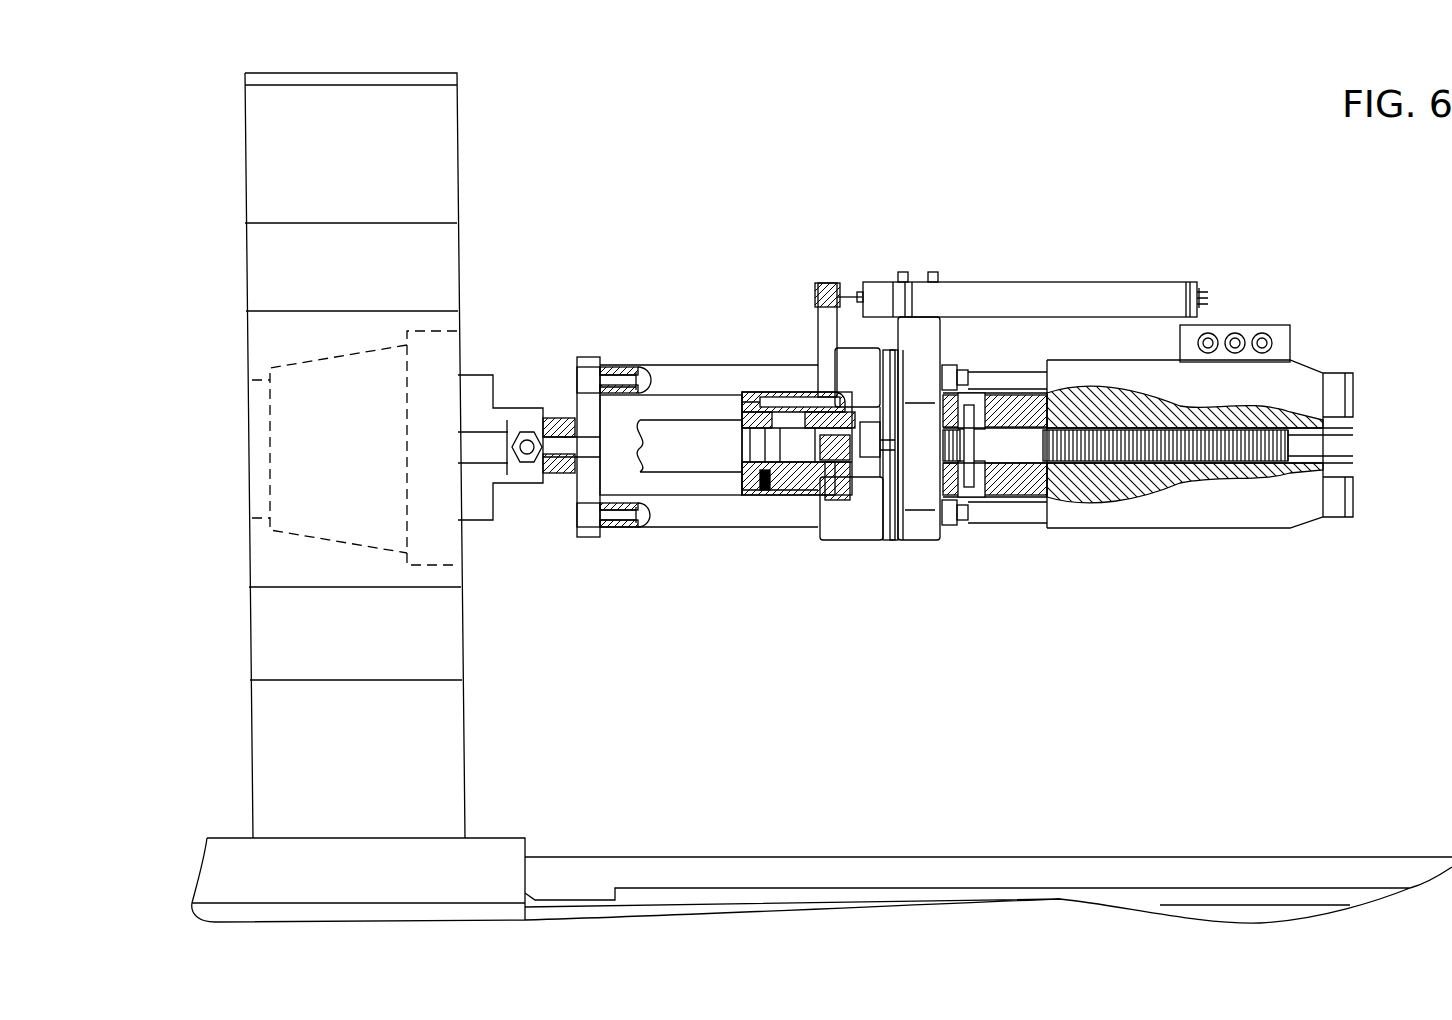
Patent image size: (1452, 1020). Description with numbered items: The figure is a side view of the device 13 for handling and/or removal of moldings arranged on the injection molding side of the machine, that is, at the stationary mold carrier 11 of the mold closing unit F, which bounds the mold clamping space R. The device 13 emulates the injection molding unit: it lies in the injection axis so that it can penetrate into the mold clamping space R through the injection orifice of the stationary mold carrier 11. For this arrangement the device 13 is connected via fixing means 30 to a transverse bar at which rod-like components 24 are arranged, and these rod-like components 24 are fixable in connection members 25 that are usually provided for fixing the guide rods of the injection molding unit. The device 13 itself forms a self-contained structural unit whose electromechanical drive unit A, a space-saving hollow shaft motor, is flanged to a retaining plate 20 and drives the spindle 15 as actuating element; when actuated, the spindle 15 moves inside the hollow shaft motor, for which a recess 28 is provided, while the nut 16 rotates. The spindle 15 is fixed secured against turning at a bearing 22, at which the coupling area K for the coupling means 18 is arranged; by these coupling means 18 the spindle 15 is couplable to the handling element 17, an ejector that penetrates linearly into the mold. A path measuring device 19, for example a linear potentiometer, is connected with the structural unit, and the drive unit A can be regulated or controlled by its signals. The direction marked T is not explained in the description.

The stationary mold carrier 11 is at (420, 160).
The device for handling and/or removal of moldings 13 is at (799, 345).
The spindle 15 is at (1182, 482).
The nut 16 is at (1015, 483).
The handling element 17 is at (673, 440).
The coupling means 18 is at (768, 498).
The path measuring device 19 is at (998, 295).
The retaining plate 20 is at (918, 495).
The bearing 22 is at (862, 515).
The rod-like components 24 is at (557, 405).
The connection members 25 is at (532, 420).
The recess 28 is at (1320, 443).
The fixing means 30 is at (585, 367).
The mold closing unit F is at (459, 322).
The mold clamping space R is at (201, 444).
The tool T is at (559, 492).
The coupling area K is at (747, 510).
The drive unit A is at (1283, 385).